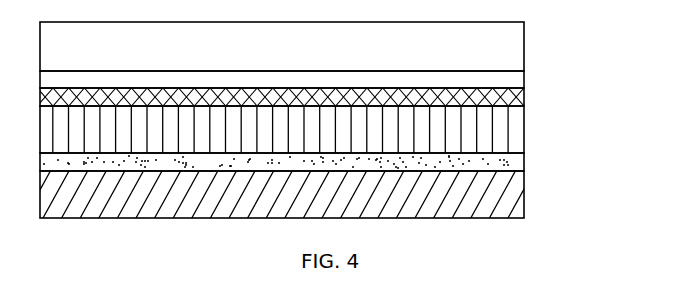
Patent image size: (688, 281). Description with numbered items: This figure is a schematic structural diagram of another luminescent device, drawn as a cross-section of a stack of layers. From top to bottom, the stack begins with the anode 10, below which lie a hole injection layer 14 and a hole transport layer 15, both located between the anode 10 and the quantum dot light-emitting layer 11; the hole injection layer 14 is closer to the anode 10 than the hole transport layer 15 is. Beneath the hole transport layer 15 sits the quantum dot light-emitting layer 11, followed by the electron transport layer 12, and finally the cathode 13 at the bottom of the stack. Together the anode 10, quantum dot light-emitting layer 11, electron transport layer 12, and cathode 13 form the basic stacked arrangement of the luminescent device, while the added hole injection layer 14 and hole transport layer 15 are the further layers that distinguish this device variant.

The anode 10 is at (505, 42).
The hole injection layer 14 is at (503, 78).
The hole transport layer 15 is at (507, 98).
The quantum dot light-emitting layer 11 is at (503, 133).
The electron transport layer 12 is at (505, 157).
The cathode 13 is at (500, 200).